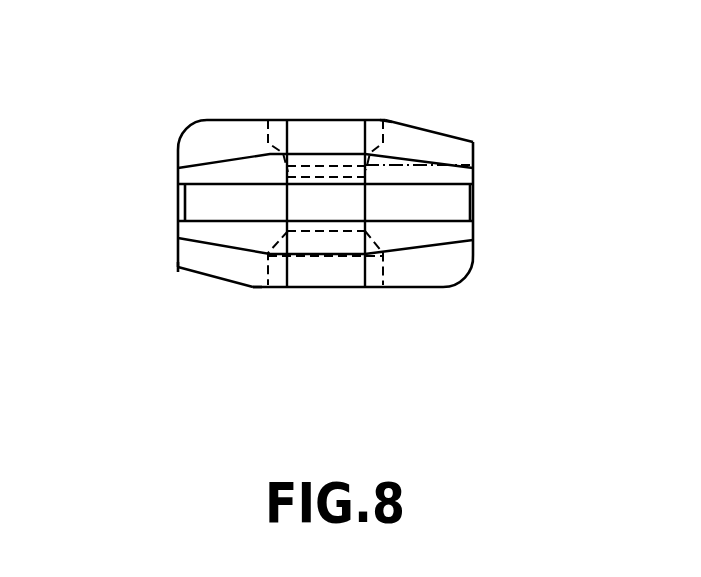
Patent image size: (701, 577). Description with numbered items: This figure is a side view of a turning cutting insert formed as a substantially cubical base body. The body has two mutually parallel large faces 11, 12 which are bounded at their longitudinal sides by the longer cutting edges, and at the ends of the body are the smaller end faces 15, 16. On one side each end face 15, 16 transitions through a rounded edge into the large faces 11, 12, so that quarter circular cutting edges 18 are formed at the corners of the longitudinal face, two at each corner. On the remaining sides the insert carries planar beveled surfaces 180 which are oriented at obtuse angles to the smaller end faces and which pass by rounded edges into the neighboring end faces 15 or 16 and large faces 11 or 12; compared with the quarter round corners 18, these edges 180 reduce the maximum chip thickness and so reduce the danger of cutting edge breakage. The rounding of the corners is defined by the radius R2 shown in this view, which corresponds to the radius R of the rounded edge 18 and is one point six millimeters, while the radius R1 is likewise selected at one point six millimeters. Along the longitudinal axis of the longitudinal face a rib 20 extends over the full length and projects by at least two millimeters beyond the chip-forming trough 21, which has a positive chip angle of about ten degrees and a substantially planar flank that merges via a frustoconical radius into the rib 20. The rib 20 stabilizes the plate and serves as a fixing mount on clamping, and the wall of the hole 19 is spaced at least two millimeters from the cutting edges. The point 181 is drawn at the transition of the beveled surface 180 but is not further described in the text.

The large face 11 is at (373, 120).
The large face 12 is at (352, 288).
The smaller end face 15 is at (480, 198).
The smaller end face 16 is at (174, 204).
The quarter circular cutting edge 18 is at (463, 282).
The hole 19 is at (308, 267).
The rib 20 is at (427, 203).
The chip-forming trough 21 is at (238, 142).
The beveled surface 180 is at (452, 133).
The edge transition point 181 is at (408, 118).
The radius of rounded edge R is at (178, 121).
The radius R1 is at (248, 297).
The radius R2 is at (180, 270).